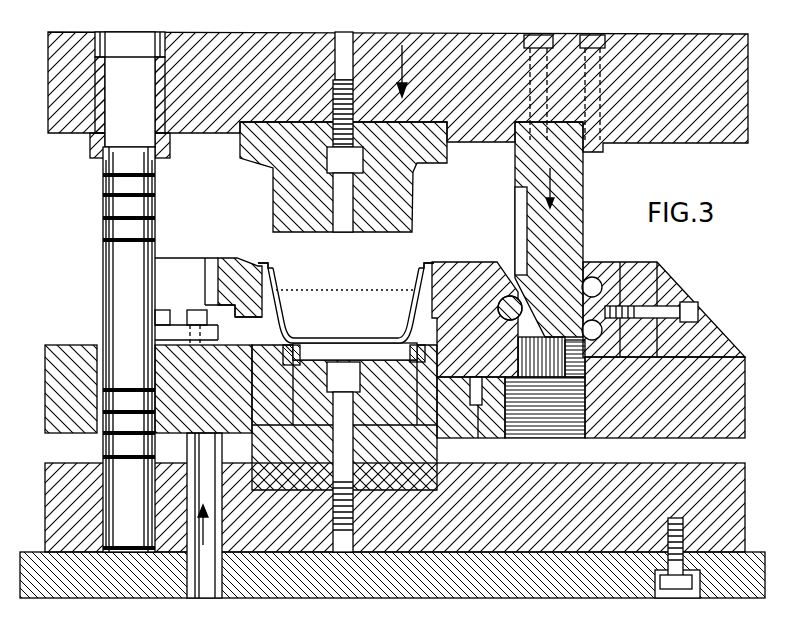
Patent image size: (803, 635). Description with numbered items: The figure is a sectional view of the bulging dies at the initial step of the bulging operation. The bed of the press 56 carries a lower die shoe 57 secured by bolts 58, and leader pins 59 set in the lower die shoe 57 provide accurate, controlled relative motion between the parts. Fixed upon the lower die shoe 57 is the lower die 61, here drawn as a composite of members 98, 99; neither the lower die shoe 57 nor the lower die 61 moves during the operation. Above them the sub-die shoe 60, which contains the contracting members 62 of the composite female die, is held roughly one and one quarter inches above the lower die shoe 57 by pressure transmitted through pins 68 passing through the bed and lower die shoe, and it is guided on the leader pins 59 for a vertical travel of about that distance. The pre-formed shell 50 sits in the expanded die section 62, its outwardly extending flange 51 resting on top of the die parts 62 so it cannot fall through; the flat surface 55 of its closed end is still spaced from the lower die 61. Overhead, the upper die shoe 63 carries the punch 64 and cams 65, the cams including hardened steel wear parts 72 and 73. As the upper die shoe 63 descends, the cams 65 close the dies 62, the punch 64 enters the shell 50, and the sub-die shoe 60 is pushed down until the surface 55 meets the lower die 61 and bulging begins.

The pre-formed shell 50 is at (283, 262).
The outwardly extending flange 51 is at (428, 263).
The flat surface 55 is at (362, 340).
The bed of the press 56 is at (545, 585).
The lower die shoe 57 is at (740, 482).
The bolts 58 is at (676, 585).
The leader pins 59 is at (120, 297).
The sub-die shoe 60 is at (740, 369).
The lower die 61 is at (437, 452).
The contracting members of the composite female die 62 is at (228, 266).
The upper die shoe 63 is at (658, 140).
The punch 64 is at (415, 183).
The cams 65 is at (583, 183).
The pins 68 is at (205, 598).
The hardened steel cam part 72 is at (515, 209).
The hardened steel cam part 73 is at (585, 216).
The lower die member 98 is at (292, 356).
The lower die member 99 is at (438, 357).